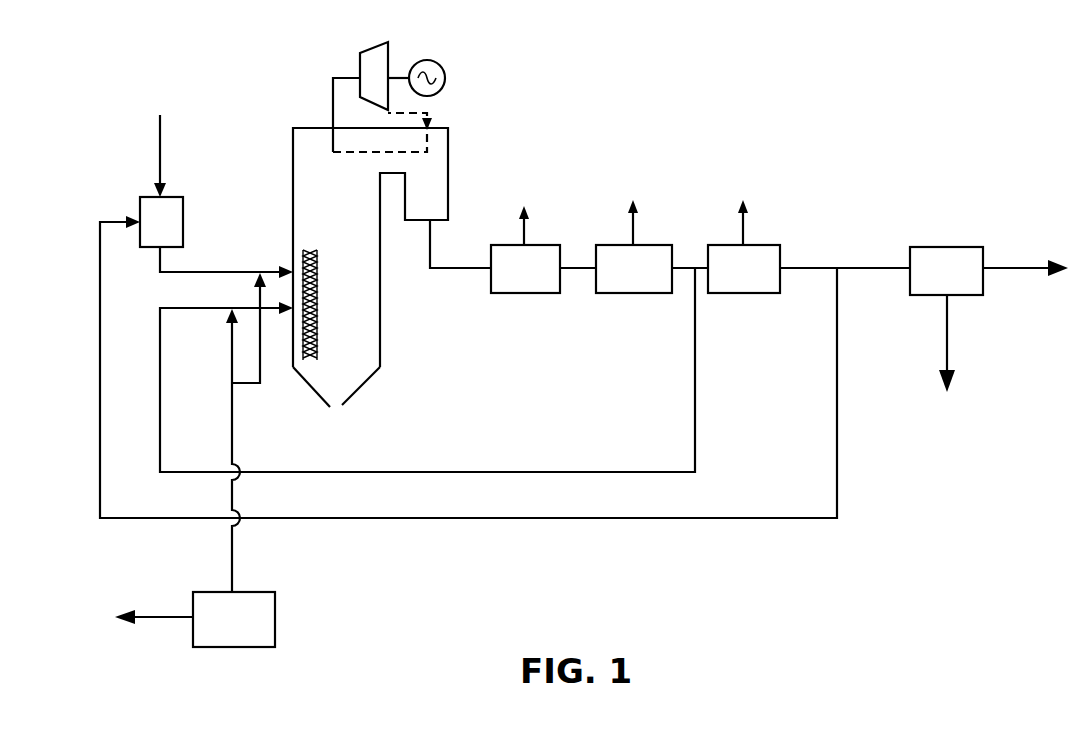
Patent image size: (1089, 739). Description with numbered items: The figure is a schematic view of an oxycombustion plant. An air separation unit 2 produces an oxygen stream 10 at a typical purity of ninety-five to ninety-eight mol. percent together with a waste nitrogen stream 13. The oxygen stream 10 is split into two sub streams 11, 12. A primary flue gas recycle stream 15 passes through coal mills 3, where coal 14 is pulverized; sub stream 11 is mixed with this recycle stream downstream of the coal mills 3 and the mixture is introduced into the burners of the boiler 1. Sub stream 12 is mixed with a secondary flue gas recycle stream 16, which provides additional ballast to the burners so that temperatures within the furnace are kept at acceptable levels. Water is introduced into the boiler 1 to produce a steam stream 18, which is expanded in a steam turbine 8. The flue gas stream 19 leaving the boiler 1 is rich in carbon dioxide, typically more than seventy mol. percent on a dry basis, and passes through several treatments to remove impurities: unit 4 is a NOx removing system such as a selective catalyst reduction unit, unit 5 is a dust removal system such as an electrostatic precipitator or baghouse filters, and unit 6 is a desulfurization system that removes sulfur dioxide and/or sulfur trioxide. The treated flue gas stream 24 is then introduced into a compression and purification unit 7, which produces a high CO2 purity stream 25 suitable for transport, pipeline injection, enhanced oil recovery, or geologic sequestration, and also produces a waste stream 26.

The boiler 1 is at (380, 338).
The air separation unit 2 is at (275, 632).
The coal mills 3 is at (174, 196).
The NOx removing system 4 is at (515, 294).
The dust removal system 5 is at (625, 294).
The desulfurization system 6 is at (763, 294).
The compression and purification unit 7 is at (957, 246).
The steam turbine 8 is at (378, 44).
The oxygen stream 10 is at (233, 572).
The sub stream 11 is at (262, 366).
The sub stream 12 is at (232, 366).
The waste nitrogen stream 13 is at (175, 618).
The coal 14 is at (158, 158).
The primary flue gas recycle stream 15 is at (100, 440).
The secondary flue gas recycle stream 16 is at (178, 308).
The steam stream 18 is at (333, 100).
The flue gas stream 19 is at (463, 270).
The flue gas stream 24 is at (875, 269).
The high CO2 purity stream 25 is at (1012, 270).
The waste stream 26 is at (950, 322).